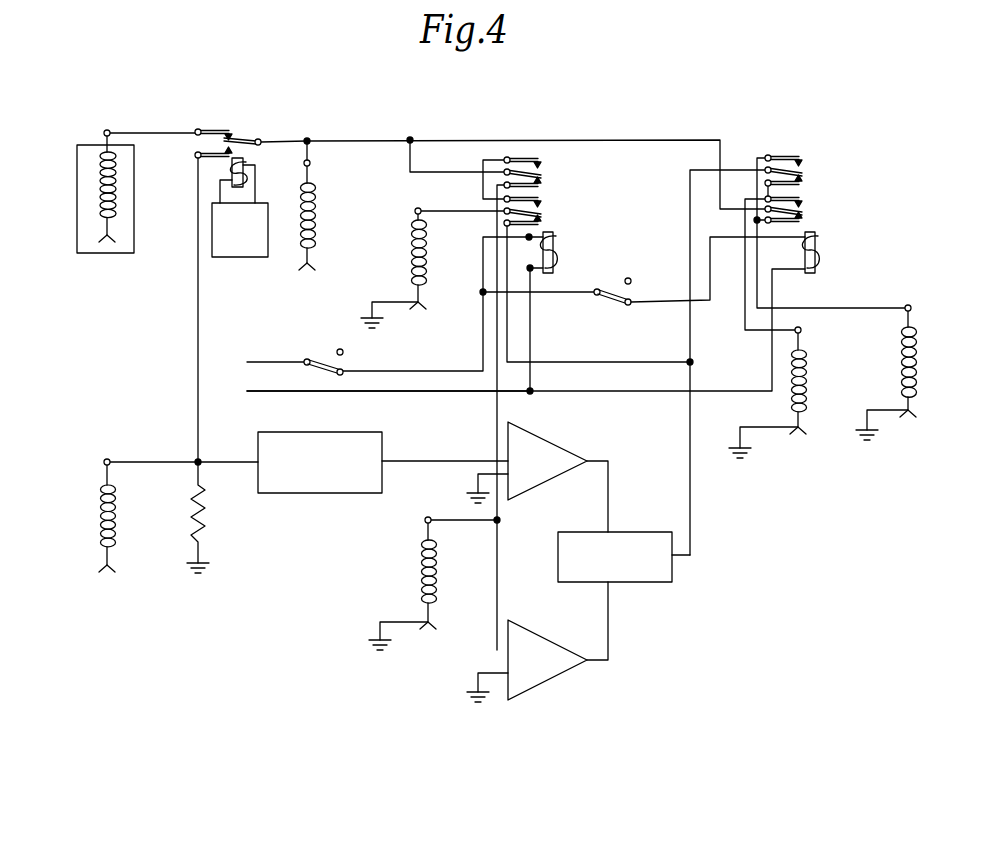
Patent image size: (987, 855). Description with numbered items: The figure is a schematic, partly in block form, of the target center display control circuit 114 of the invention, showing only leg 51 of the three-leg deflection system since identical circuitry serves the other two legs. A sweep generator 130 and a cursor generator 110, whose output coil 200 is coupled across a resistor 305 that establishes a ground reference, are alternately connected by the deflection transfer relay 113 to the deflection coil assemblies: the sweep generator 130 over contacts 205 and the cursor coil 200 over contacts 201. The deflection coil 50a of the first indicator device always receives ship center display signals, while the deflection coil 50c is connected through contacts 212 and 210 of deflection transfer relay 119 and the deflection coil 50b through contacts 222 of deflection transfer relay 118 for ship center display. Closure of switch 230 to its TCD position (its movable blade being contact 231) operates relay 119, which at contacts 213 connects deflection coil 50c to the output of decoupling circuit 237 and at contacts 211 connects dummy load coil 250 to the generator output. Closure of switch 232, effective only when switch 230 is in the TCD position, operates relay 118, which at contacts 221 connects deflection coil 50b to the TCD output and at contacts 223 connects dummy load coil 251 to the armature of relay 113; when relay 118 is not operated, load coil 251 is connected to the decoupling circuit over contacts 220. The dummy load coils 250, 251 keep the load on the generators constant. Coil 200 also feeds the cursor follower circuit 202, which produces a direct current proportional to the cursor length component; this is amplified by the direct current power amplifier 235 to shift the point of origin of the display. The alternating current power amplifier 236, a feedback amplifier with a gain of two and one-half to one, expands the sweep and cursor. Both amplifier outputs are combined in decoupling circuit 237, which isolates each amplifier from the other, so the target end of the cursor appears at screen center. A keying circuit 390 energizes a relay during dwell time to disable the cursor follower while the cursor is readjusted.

The contacts of deflection transfer relay 113 205 is at (255, 127).
The contacts of deflection transfer relay 113 201 is at (232, 150).
The deflection transfer relay 113 is at (246, 165).
The keying circuit 390 is at (222, 258).
The sweep generator 130 is at (116, 213).
The leg S1 51 is at (518, 339).
The deflection coil assembly 50a is at (316, 207).
The deflection coil assembly 50b is at (806, 379).
The deflection coil assembly 50c is at (423, 263).
The contacts of deflection transfer relay 119 210 is at (547, 163).
The contacts of deflection transfer relay 119 211 is at (546, 180).
The contacts of deflection transfer relay 119 212 is at (550, 204).
The contacts of deflection transfer relay 119 213 is at (548, 218).
The deflection transfer relay 119 is at (557, 248).
The switch 232 is at (613, 289).
The contacts of deflection transfer relay 118 220 is at (804, 163).
The contacts of deflection transfer relay 118 221 is at (806, 176).
The contacts of deflection transfer relay 118 222 is at (806, 202).
The contacts of deflection transfer relay 118 223 is at (806, 216).
The deflection transfer relay 118 is at (818, 253).
The dummy load coil 251 is at (916, 365).
The switch 230 is at (343, 367).
The switch blade 231 is at (323, 373).
The cursor follower circuit 202 is at (385, 441).
The direct current power amplifier 235 is at (552, 441).
The decoupling circuit 237 is at (648, 531).
The alternating current power amplifier 236 is at (545, 683).
The dummy load coil 250 is at (420, 565).
The coil of cursor generator 200 is at (115, 514).
The resistor 305 is at (210, 522).
The cursor generator 110 is at (122, 540).
The target center display control circuit 114 is at (624, 579).